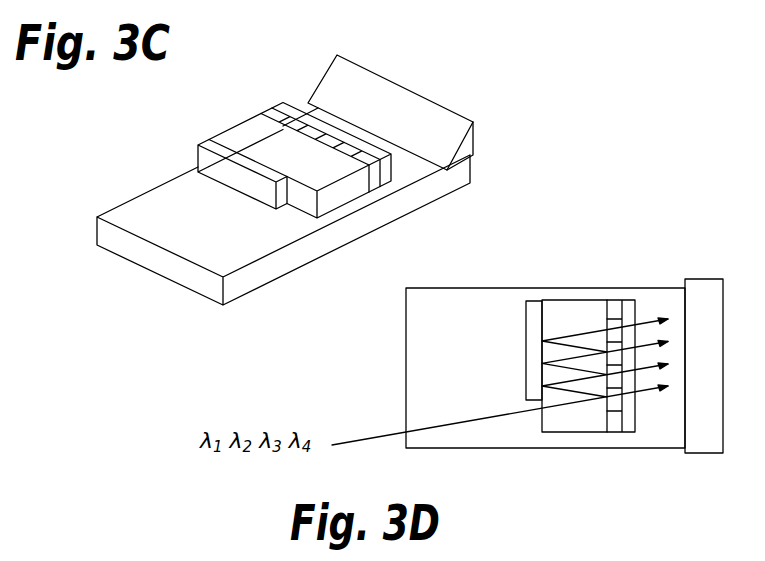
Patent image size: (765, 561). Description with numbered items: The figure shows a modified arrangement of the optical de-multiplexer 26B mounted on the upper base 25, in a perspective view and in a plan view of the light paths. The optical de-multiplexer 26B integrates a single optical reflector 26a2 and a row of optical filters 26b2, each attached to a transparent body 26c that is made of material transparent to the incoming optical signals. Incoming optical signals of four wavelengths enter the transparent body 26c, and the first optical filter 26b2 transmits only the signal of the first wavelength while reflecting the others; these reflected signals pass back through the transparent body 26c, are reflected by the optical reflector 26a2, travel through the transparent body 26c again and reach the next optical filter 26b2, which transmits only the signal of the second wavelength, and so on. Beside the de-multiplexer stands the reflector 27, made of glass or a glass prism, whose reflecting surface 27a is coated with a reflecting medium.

In FIG. 3C, the upper base 25 is at (193, 273).
In FIG. 3D, the upper base 25 is at (417, 383).
In FIG. 3C, the optical de-multiplexer 26B is at (291, 192).
In FIG. 3D, the optical de-multiplexer 26B is at (552, 365).
In FIG. 3C, the optical reflector 26a2 is at (258, 189).
In FIG. 3D, the optical reflector 26a2 is at (533, 340).
In FIG. 3C, the transparent body 26c is at (341, 196).
In FIG. 3D, the transparent body 26c is at (578, 428).
In FIG. 3C, the optical filter 26b2 is at (374, 172).
In FIG. 3D, the optical filter 26b2 is at (615, 428).
In FIG. 3C, the reflector 27 is at (415, 92).
In FIG. 3D, the reflector 27 is at (708, 455).
In FIG. 3C, the reflecting surface 27a is at (447, 141).